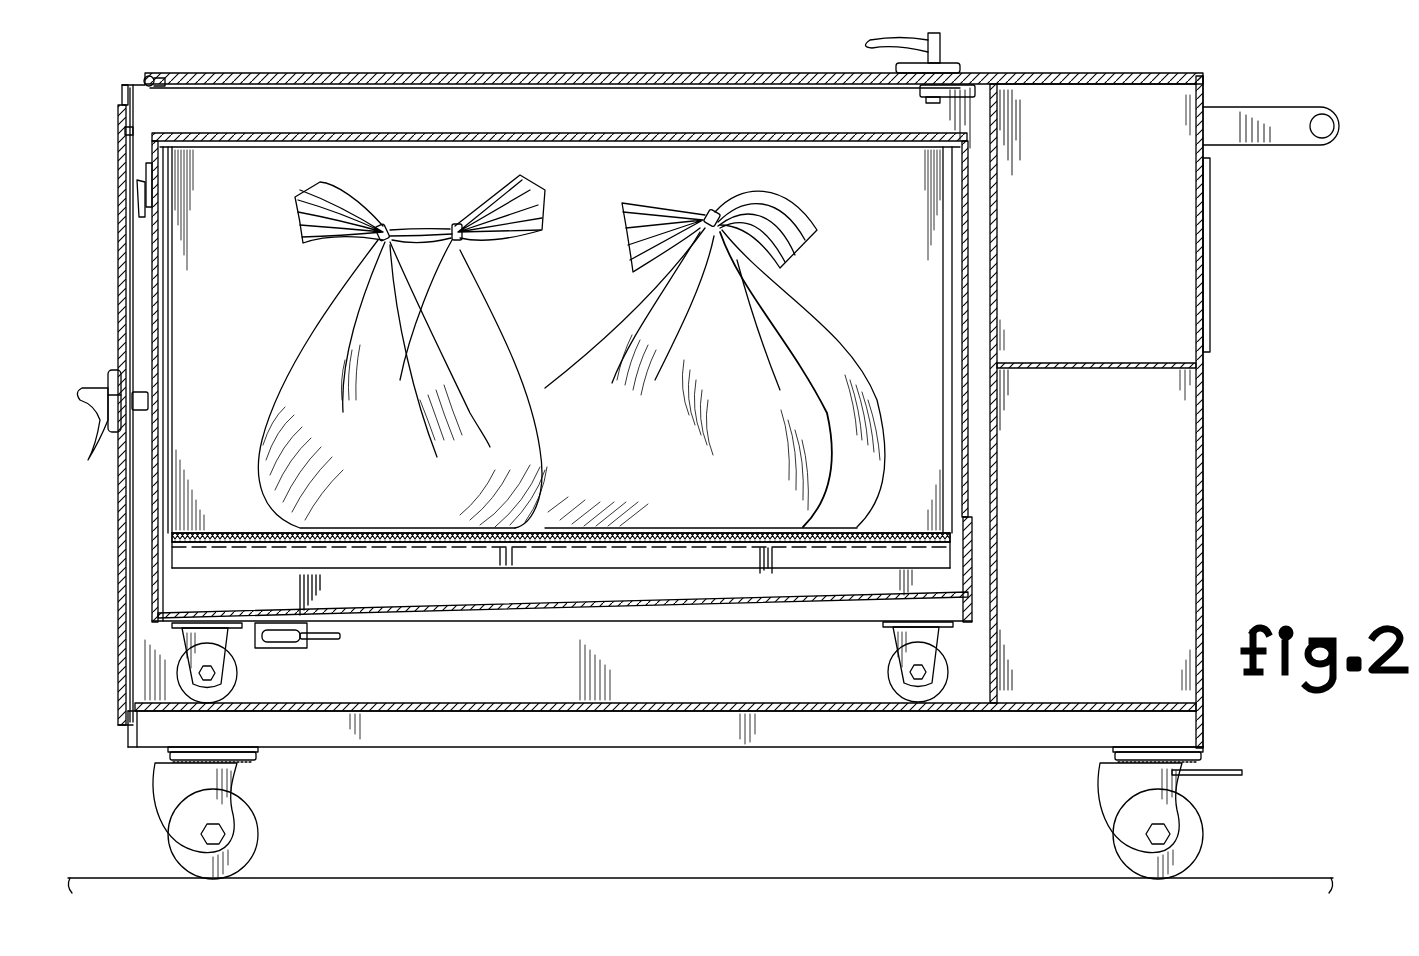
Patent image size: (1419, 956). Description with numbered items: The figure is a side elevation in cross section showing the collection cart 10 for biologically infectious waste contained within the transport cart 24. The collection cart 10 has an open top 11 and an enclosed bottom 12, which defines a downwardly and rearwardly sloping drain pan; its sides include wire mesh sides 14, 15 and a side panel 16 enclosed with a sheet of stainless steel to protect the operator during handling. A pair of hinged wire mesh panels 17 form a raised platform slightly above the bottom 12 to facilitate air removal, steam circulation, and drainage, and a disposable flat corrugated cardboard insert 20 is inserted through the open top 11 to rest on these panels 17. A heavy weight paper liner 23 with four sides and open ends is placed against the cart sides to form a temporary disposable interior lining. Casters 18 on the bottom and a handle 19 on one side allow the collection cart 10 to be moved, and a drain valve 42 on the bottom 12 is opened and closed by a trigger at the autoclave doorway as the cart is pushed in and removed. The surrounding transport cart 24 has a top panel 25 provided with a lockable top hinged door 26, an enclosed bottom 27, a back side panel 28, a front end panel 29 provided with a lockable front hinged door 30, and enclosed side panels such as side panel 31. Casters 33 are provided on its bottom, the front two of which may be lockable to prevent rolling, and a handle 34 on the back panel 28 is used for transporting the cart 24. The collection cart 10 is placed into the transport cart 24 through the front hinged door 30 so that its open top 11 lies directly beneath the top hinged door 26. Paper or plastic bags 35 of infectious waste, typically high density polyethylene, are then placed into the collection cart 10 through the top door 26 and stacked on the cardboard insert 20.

The collection cart 10 is at (795, 136).
The open top 11 is at (238, 147).
The enclosed bottom 12 is at (663, 605).
The wire mesh side 14 is at (962, 292).
The wire mesh side 15 is at (152, 277).
The side panel 16 is at (601, 598).
The hinged wire mesh panels 17 is at (504, 548).
The casters 18 is at (237, 681).
The handle 19 is at (138, 207).
The corrugated cardboard insert 20 is at (217, 533).
The paper liner 23 is at (178, 250).
The transport cart 24 is at (1204, 514).
The top panel 25 is at (1087, 76).
The top hinged door 26 is at (540, 73).
The enclosed bottom 27 is at (835, 712).
The back side panel 28 is at (1205, 458).
The front end panel 29 is at (124, 92).
The front hinged door 30 is at (118, 520).
The enclosed side panel 31 is at (478, 673).
The casters 33 is at (256, 830).
The handle 34 is at (1330, 132).
The bags 35 is at (485, 350).
The drain valve 42 is at (282, 650).